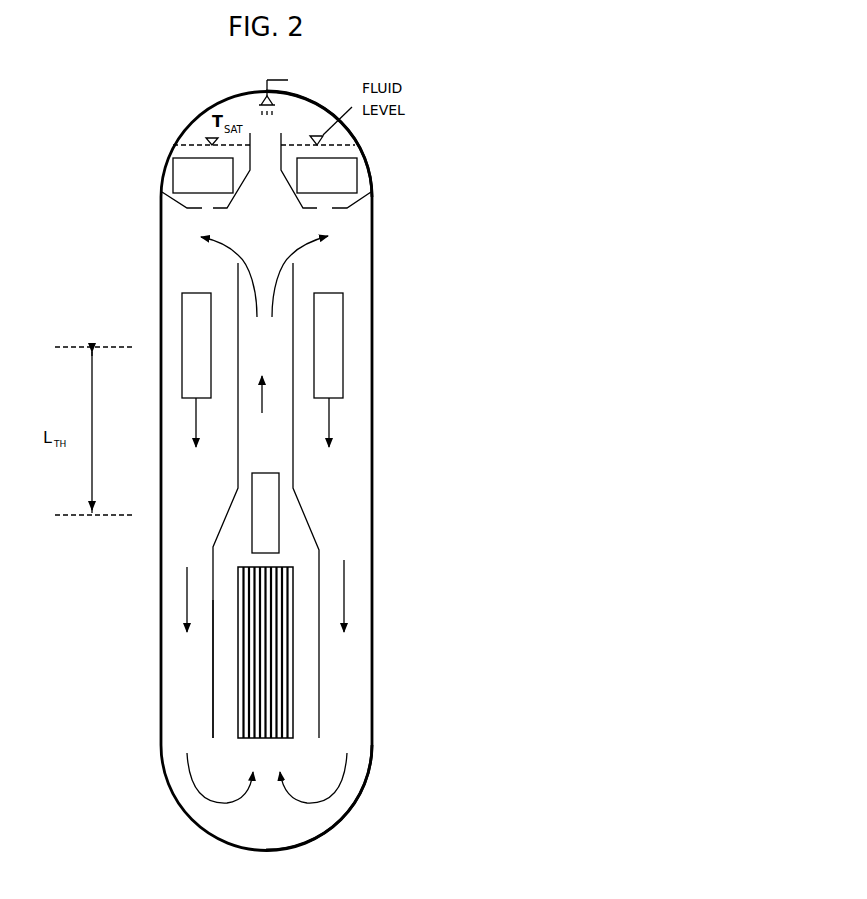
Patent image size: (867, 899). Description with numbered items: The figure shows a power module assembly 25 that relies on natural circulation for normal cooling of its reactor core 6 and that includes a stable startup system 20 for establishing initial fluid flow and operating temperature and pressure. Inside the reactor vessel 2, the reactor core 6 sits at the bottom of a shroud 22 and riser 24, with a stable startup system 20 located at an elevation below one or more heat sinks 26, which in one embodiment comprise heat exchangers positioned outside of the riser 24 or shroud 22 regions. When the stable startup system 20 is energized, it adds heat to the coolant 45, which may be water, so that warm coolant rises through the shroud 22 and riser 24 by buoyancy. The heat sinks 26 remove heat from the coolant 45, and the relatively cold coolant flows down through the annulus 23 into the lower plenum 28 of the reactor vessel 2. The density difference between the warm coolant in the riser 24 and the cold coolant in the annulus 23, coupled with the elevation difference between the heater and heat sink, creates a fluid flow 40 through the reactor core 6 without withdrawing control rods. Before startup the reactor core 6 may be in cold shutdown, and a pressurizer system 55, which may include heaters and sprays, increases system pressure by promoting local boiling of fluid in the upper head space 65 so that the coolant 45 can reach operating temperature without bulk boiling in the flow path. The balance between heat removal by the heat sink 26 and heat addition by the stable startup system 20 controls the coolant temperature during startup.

The reactor vessel 2 is at (202, 838).
The reactor core 6 is at (305, 673).
The stable startup system 20 is at (283, 522).
The shroud 22 is at (202, 690).
The annulus 23 is at (183, 543).
The riser 24 is at (229, 287).
The power module assembly 25 is at (383, 790).
The heat sink 26 is at (175, 330).
The lower plenum 28 is at (230, 823).
The fluid flow 40 is at (345, 245).
The coolant 45 is at (350, 587).
The pressurizer system 55 is at (377, 152).
The upper head space 65 is at (247, 110).